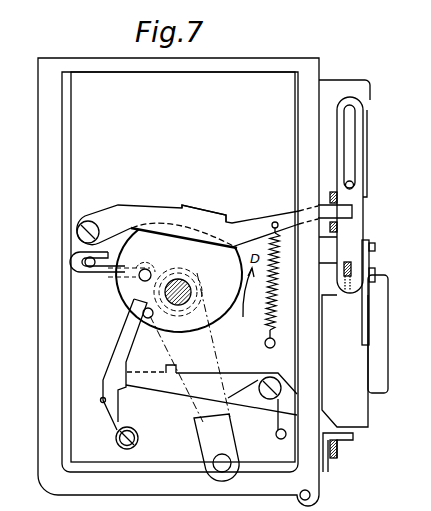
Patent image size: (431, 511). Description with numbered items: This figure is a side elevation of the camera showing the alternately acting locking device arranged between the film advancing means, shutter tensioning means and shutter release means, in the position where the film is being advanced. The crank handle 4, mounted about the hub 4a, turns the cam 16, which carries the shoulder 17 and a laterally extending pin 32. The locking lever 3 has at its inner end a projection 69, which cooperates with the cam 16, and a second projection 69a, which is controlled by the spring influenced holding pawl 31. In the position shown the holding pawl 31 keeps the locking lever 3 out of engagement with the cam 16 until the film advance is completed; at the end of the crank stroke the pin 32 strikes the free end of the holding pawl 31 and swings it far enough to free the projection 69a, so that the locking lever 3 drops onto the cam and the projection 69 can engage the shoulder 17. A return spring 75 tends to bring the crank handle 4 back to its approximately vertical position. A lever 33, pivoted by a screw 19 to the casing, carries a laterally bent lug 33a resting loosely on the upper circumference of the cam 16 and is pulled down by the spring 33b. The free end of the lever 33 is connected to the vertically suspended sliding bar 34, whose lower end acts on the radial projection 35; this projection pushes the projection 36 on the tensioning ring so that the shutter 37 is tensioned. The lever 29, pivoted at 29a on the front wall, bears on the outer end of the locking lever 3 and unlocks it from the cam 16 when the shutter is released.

The locking lever 3 is at (172, 390).
The crank handle 4 is at (208, 432).
The hub shaft 4a is at (189, 285).
The cam 16 is at (220, 318).
The shoulder 17 is at (166, 215).
The pivot screw 19 is at (234, 399).
The lever 29 is at (352, 440).
The pivot 29a is at (340, 462).
The holding pawl 31 is at (113, 353).
The pin 32 is at (138, 321).
The lever 33 is at (246, 232).
The lug 33a is at (188, 207).
The spring 33b is at (278, 313).
The bar 34 is at (357, 225).
The radial projection 35 is at (351, 270).
The projection 36 is at (372, 250).
The shutter 37 is at (362, 414).
The projection 69 is at (173, 365).
The second projection 69a is at (130, 386).
The return spring 75 is at (116, 262).